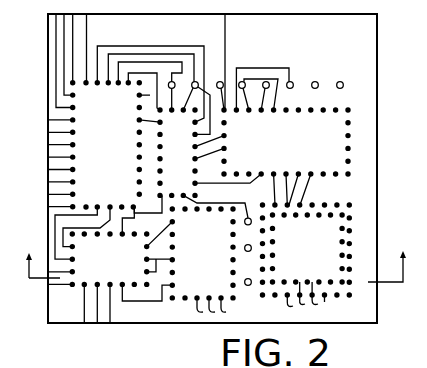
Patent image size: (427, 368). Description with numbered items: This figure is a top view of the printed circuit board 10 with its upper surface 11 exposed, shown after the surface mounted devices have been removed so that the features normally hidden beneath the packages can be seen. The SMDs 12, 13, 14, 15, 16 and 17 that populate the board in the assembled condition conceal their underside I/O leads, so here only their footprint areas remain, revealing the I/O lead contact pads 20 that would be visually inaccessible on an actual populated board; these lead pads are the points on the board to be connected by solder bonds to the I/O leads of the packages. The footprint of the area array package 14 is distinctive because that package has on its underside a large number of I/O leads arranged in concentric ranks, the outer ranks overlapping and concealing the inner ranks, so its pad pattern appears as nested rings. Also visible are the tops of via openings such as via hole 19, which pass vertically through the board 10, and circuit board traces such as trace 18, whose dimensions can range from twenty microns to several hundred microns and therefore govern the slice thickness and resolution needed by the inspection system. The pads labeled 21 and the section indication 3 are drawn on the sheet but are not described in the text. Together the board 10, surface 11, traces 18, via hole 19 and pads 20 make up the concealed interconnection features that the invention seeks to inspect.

The printed circuit board 10 is at (105, 334).
The upper surface 11 is at (158, 313).
The SMD 12 is at (112, 272).
The SMD 13 is at (204, 272).
The area array package 14 is at (309, 273).
The SMD 15 is at (109, 164).
The SMD 16 is at (182, 167).
The SMD 17 is at (279, 169).
The trace 18 is at (243, 68).
The via hole 19 is at (248, 285).
The I/O lead contact pads 20 is at (221, 310).
The terminal pads 21 is at (318, 304).
The section line 3- 3 is at (215, 257).